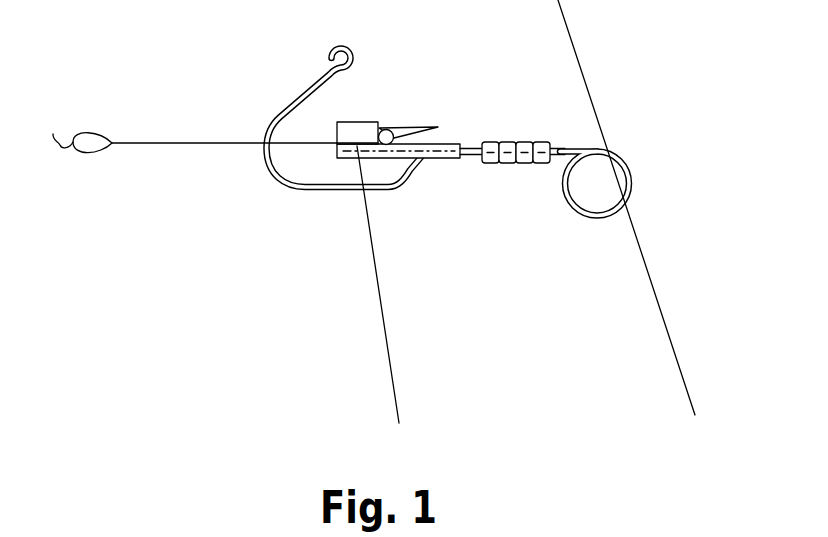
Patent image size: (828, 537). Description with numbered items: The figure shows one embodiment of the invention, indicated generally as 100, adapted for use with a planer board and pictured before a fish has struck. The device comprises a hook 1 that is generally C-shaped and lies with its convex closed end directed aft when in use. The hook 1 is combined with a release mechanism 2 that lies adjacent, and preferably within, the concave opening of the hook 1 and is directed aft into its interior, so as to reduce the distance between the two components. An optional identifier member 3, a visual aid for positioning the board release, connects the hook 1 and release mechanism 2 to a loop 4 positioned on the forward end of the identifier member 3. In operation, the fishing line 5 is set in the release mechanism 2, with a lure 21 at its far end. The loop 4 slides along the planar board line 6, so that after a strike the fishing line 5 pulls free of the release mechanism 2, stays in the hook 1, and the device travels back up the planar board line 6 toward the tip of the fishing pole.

The embodiment of the invention 100 is at (220, 63).
The hook 1 is at (266, 114).
The release mechanism 2 is at (363, 128).
The identifier member 3 is at (493, 143).
The loop 4 is at (570, 209).
The fishing line 5 is at (388, 378).
The planar board line 6 is at (658, 302).
The lure 21 is at (92, 156).